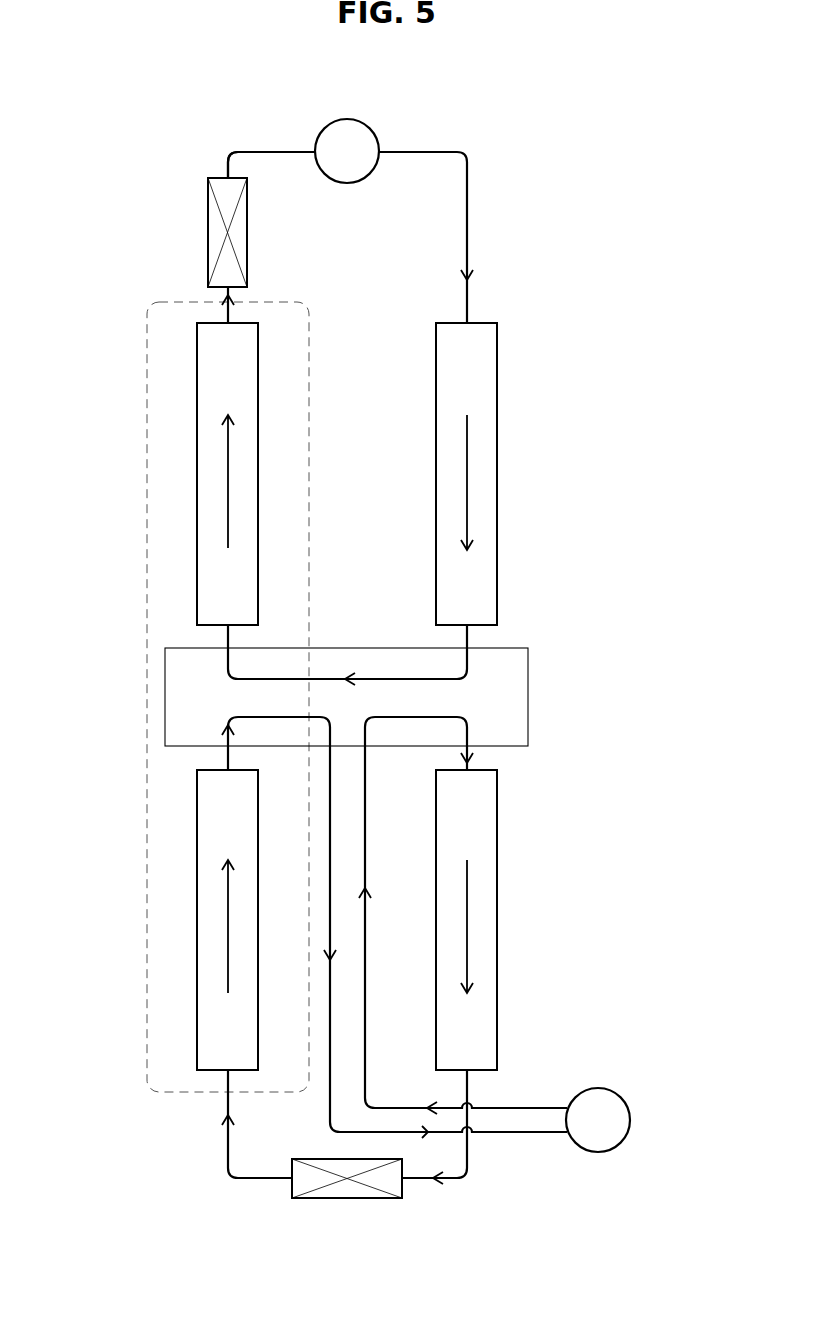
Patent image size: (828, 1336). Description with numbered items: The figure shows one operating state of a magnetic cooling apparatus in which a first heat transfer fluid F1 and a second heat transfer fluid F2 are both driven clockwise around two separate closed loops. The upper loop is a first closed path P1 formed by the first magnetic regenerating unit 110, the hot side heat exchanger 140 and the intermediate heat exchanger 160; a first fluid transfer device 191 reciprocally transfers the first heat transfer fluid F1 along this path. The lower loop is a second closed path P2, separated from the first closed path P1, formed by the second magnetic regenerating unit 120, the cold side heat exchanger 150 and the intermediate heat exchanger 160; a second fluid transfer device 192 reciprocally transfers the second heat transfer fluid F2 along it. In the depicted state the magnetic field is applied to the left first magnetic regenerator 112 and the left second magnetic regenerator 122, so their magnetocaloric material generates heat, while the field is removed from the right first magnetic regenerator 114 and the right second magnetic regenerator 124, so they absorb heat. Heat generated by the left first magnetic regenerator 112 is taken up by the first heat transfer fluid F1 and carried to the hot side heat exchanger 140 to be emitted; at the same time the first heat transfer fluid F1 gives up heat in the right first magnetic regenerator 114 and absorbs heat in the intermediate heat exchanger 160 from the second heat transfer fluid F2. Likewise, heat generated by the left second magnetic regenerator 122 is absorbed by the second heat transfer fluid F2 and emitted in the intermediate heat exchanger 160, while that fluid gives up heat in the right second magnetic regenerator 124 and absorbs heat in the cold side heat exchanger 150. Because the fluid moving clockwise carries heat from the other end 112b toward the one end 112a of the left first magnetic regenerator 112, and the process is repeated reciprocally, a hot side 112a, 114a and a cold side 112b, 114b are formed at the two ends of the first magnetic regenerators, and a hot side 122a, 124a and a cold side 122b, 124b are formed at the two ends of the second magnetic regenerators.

The first magnetic regenerating unit 110 is at (347, 446).
The left first magnetic regenerator 112 is at (190, 417).
The hot side of left first magnetic regenerator 112a is at (240, 322).
The cold side of left first magnetic regenerator 112b is at (215, 630).
The right first magnetic regenerator 114 is at (505, 369).
The hot side of right first magnetic regenerator 114a is at (480, 322).
The cold side of right first magnetic regenerator 114b is at (480, 628).
The second magnetic regenerating unit 120 is at (345, 928).
The left second magnetic regenerator 122 is at (190, 865).
The hot side of left second magnetic regenerator 122a is at (205, 768).
The cold side of left second magnetic regenerator 122b is at (215, 1072).
The right second magnetic regenerator 124 is at (505, 829).
The hot side of right second magnetic regenerator 124a is at (490, 768).
The cold side of right second magnetic regenerator 124b is at (482, 1075).
The hot side heat exchanger 140 is at (196, 211).
The cold side heat exchanger 150 is at (349, 1207).
The intermediate heat exchanger 160 is at (540, 662).
The first fluid transfer device 191 is at (376, 115).
The second fluid transfer device 192 is at (636, 1088).
The first closed path P1 is at (234, 140).
The second closed path P2 is at (476, 1188).
The first heat transfer fluid F1 is at (467, 183).
The second heat transfer fluid F2 is at (245, 712).